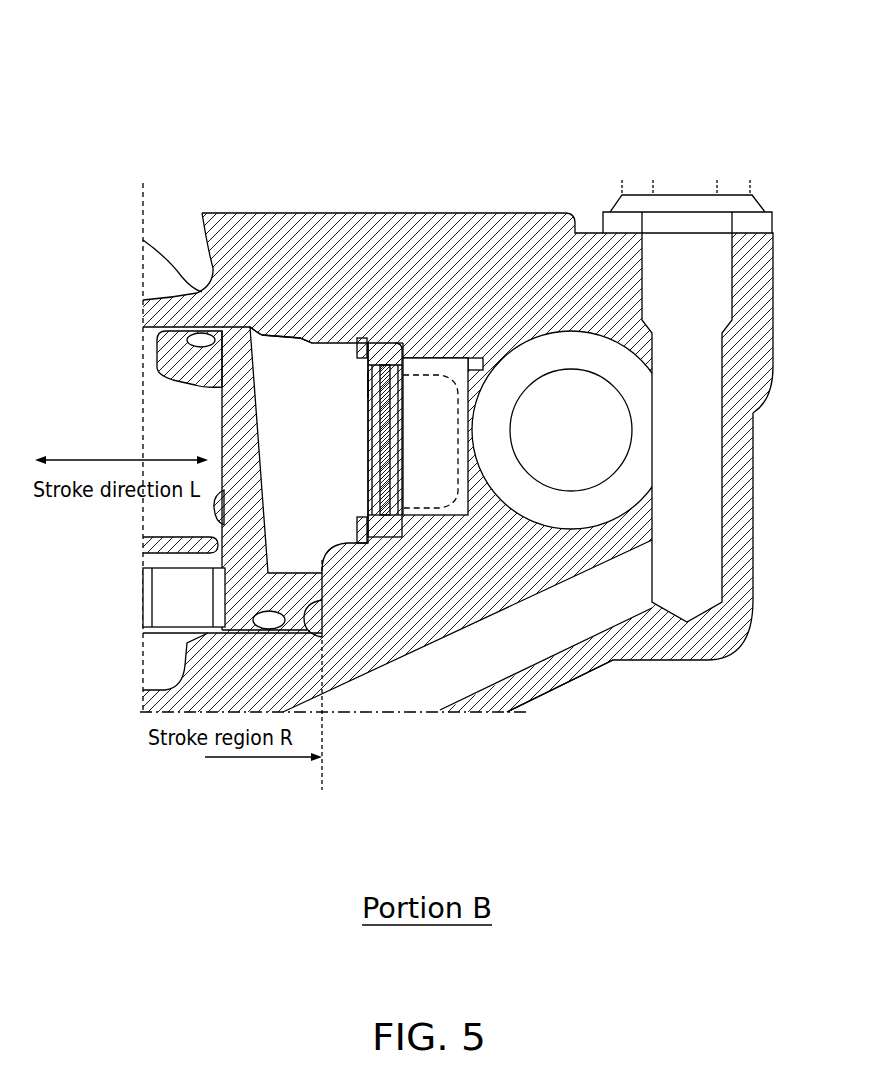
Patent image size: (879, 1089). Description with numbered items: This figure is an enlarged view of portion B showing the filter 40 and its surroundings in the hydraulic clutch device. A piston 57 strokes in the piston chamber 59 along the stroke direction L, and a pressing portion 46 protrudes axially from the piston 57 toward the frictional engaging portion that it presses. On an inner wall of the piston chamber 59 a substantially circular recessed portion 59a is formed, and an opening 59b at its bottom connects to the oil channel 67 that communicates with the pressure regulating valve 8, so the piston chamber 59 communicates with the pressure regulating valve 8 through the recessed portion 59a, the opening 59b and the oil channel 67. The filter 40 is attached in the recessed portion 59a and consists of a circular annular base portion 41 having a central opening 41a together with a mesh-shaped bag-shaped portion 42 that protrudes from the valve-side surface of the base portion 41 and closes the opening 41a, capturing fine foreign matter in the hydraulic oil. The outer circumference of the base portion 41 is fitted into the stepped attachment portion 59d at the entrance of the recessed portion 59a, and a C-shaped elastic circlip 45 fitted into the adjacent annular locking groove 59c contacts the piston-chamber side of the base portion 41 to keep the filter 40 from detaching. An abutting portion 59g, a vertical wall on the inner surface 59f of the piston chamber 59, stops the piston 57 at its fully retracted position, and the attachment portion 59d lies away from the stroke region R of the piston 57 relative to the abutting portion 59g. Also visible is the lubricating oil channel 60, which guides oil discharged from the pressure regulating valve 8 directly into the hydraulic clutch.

The pressure regulating valve 8 is at (673, 428).
The filter 40 is at (512, 56).
The base portion 41 is at (405, 352).
The opening 41a is at (368, 383).
The bag-shaped portion 42 is at (442, 352).
The circlip 45 is at (375, 343).
The pressing portion 46 is at (167, 423).
The piston 57 is at (225, 330).
The piston chamber 59 is at (322, 460).
The recessed portion 59a is at (468, 356).
The opening 59b is at (482, 368).
The locking groove 59c is at (360, 336).
The attachment portion 59d is at (400, 342).
The inner surface 59f is at (313, 340).
The abutting portion 59g is at (311, 634).
The lubricating oil channel 60 is at (558, 652).
The oil channel 67 is at (569, 213).